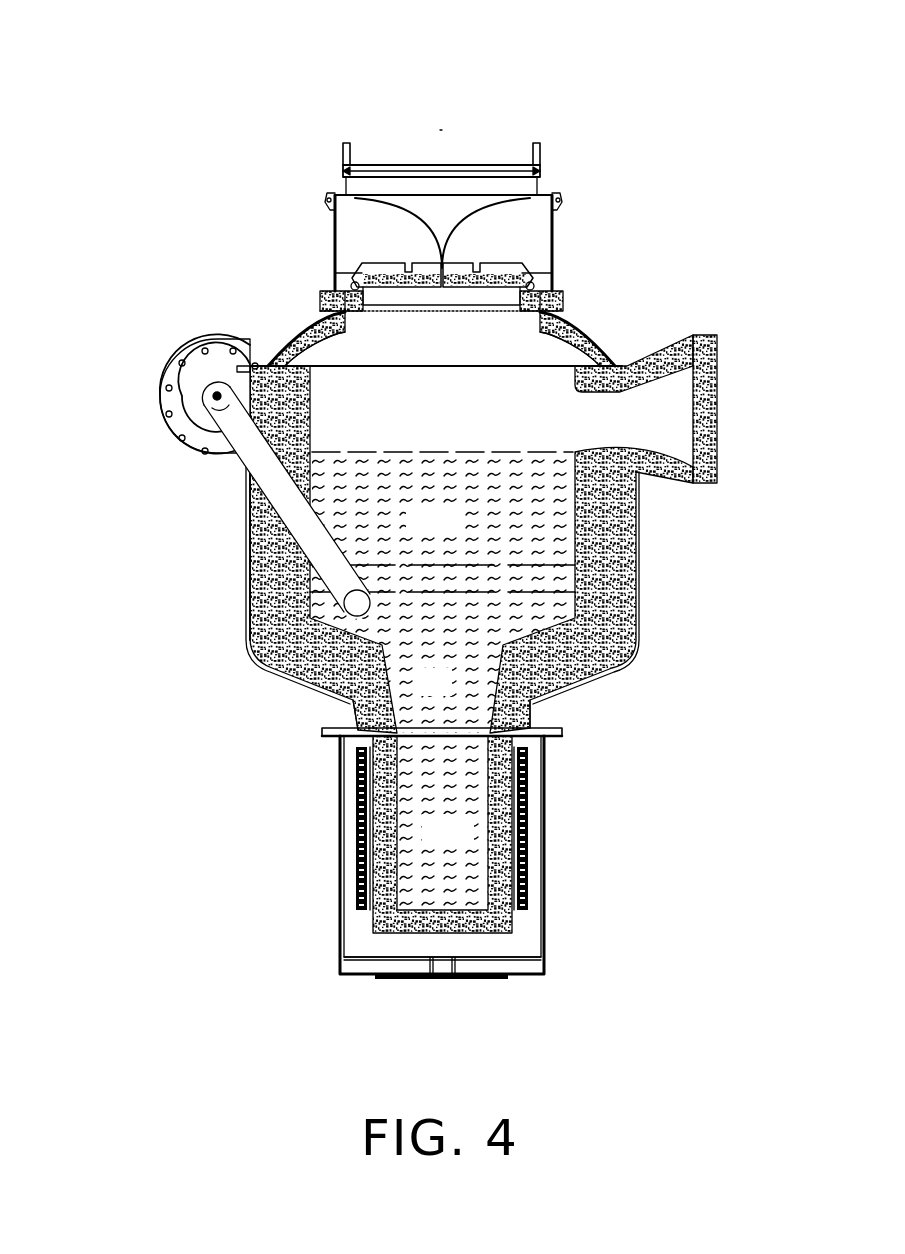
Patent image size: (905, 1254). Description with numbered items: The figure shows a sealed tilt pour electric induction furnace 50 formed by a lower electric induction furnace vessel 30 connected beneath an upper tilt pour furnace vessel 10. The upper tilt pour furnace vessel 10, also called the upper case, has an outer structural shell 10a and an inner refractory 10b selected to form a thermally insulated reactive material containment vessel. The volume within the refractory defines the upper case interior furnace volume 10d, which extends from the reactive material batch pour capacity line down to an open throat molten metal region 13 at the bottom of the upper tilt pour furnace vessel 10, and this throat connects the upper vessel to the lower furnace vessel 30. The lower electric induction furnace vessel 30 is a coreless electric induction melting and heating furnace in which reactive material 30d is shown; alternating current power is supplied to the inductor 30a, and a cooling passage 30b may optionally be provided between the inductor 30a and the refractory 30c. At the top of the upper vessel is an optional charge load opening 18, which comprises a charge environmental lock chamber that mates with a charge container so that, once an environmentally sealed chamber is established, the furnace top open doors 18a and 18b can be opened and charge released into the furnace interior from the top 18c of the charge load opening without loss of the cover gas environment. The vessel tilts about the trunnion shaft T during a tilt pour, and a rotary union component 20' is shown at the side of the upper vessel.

The upper tilt pour furnace vessel 10 is at (125, 135).
The outer structural shell 10a is at (637, 583).
The inner refractory 10b is at (565, 660).
The upper case interior furnace volume 10d is at (411, 529).
The open throat molten metal region 13 is at (418, 697).
The charge load opening 18 is at (582, 148).
The furnace top open door 18a is at (335, 246).
The furnace top open door 18b is at (553, 247).
The top of the charge load opening 18c is at (353, 112).
The stirring mechanism flange 20' is at (189, 381).
The trunnion shaft T is at (212, 401).
The lower electric induction furnace vessel 30 is at (295, 732).
The inductor 30a is at (533, 827).
The cooling passage 30b is at (513, 916).
The refractory 30c is at (398, 933).
The reactive material 30d is at (425, 841).
The sealed tilt pour electric induction furnace 50 is at (643, 118).